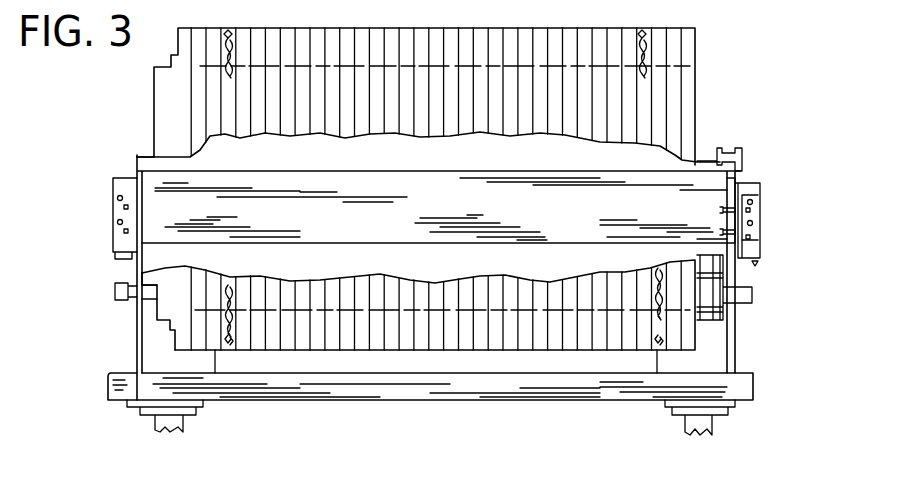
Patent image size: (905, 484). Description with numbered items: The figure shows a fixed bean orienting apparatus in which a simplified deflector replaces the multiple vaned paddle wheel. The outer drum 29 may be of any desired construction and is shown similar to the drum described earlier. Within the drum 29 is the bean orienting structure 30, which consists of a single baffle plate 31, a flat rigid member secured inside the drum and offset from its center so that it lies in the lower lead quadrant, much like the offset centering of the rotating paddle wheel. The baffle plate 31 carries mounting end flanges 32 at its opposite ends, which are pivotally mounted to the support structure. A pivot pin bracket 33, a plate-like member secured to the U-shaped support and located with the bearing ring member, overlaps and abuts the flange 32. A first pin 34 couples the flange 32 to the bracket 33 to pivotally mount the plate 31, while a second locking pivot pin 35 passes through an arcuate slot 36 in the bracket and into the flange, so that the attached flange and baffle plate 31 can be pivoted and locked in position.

The outer drum 29 is at (657, 95).
The bean orienting structure 30 is at (468, 163).
The baffle plate 31 is at (368, 238).
The mounting end flanges 32 is at (727, 190).
The pivot pin bracket 33 is at (744, 162).
The first pin 34 is at (752, 238).
The second locking pivot pin 35 is at (752, 210).
The slot 36 is at (728, 221).